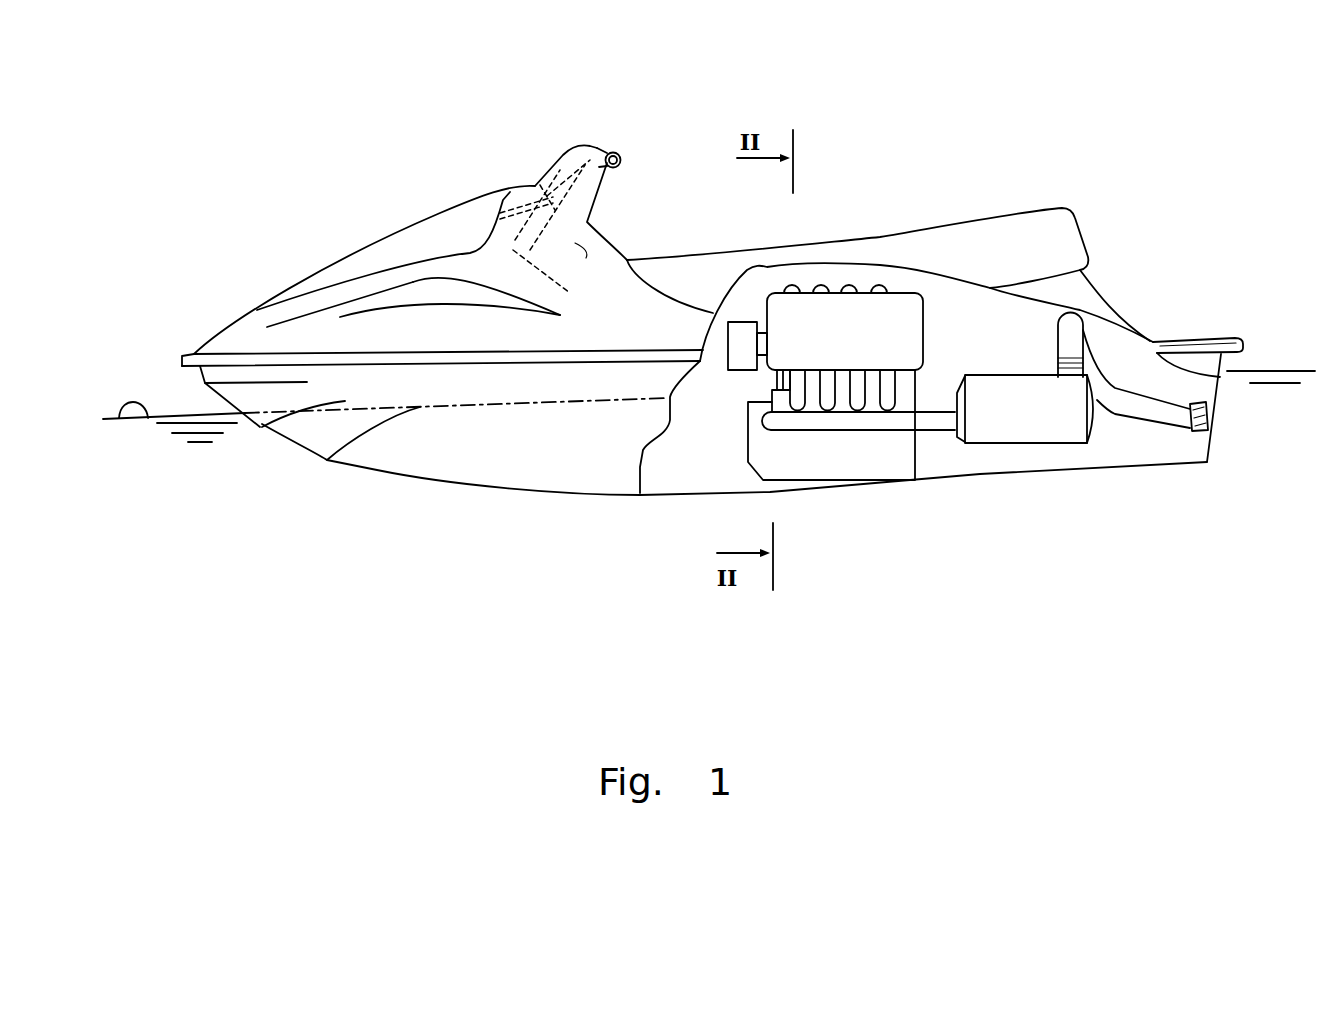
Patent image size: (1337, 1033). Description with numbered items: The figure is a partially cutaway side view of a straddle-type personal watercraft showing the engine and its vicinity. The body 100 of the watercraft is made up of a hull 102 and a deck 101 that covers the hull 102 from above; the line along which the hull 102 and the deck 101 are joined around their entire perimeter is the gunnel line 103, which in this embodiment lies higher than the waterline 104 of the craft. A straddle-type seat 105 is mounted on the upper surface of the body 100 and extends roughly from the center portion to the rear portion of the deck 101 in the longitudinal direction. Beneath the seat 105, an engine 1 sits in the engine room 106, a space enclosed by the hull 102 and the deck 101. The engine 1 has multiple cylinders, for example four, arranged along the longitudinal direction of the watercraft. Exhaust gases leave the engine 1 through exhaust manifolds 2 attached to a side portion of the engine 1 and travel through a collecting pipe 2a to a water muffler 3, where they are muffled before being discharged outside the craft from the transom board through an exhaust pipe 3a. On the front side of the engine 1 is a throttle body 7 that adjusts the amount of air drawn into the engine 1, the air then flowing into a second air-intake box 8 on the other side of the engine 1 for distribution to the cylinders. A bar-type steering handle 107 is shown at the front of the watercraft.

The body of the watercraft 100 is at (195, 277).
The deck 101 is at (228, 333).
The hull 102 is at (210, 402).
The gunnel line 103 is at (506, 361).
The waterline 104 is at (121, 418).
The straddle-type seat 105 is at (1042, 208).
The engine room 106 is at (728, 386).
The bar-type steering handle 107 is at (598, 145).
The engine 1 is at (736, 446).
The exhaust manifolds 2 is at (857, 400).
The collecting pipe 2a is at (907, 423).
The water muffler 3 is at (1023, 427).
The exhaust pipe 3a is at (1142, 412).
The throttle body 7 is at (745, 330).
The second air-intake box 8 is at (905, 307).